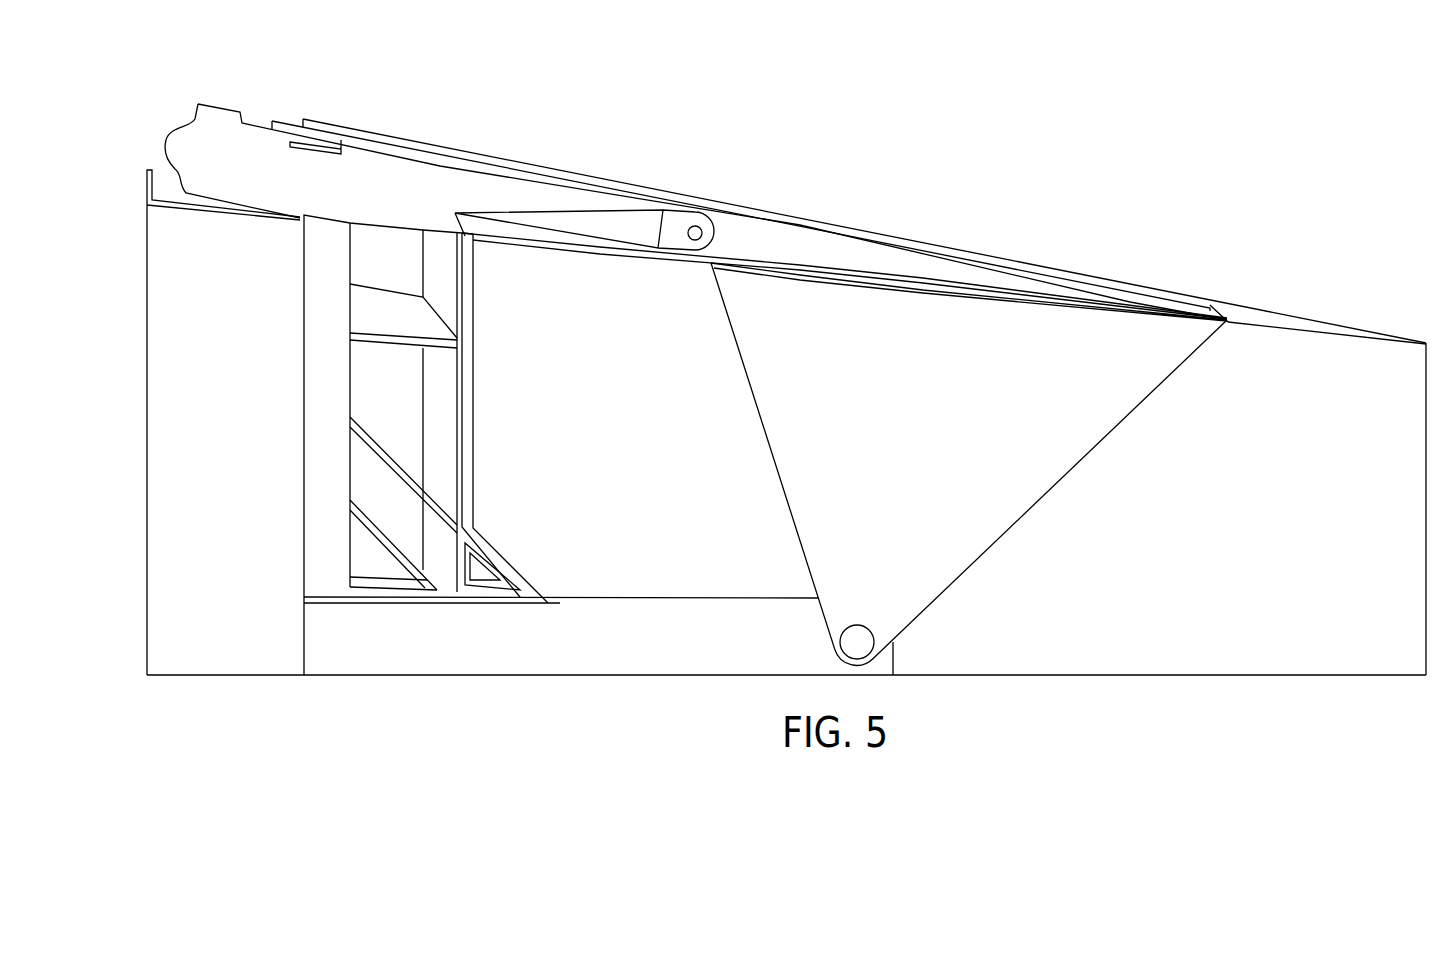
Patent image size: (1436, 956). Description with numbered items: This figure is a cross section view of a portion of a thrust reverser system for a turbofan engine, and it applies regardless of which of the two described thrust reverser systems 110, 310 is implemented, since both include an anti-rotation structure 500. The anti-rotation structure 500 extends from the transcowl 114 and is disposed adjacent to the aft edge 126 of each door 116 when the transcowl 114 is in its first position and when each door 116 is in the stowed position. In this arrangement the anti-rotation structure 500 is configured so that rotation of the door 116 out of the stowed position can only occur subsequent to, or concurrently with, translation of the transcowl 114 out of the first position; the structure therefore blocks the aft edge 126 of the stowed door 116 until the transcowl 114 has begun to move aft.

The thrust reverser system 110 is at (696, 176).
The thrust reverser system 310 is at (1060, 126).
The anti-rotation structure 500 is at (1195, 286).
The door 116 is at (950, 291).
The transcowl 114 is at (1252, 304).
The aft edge 126 is at (1230, 323).